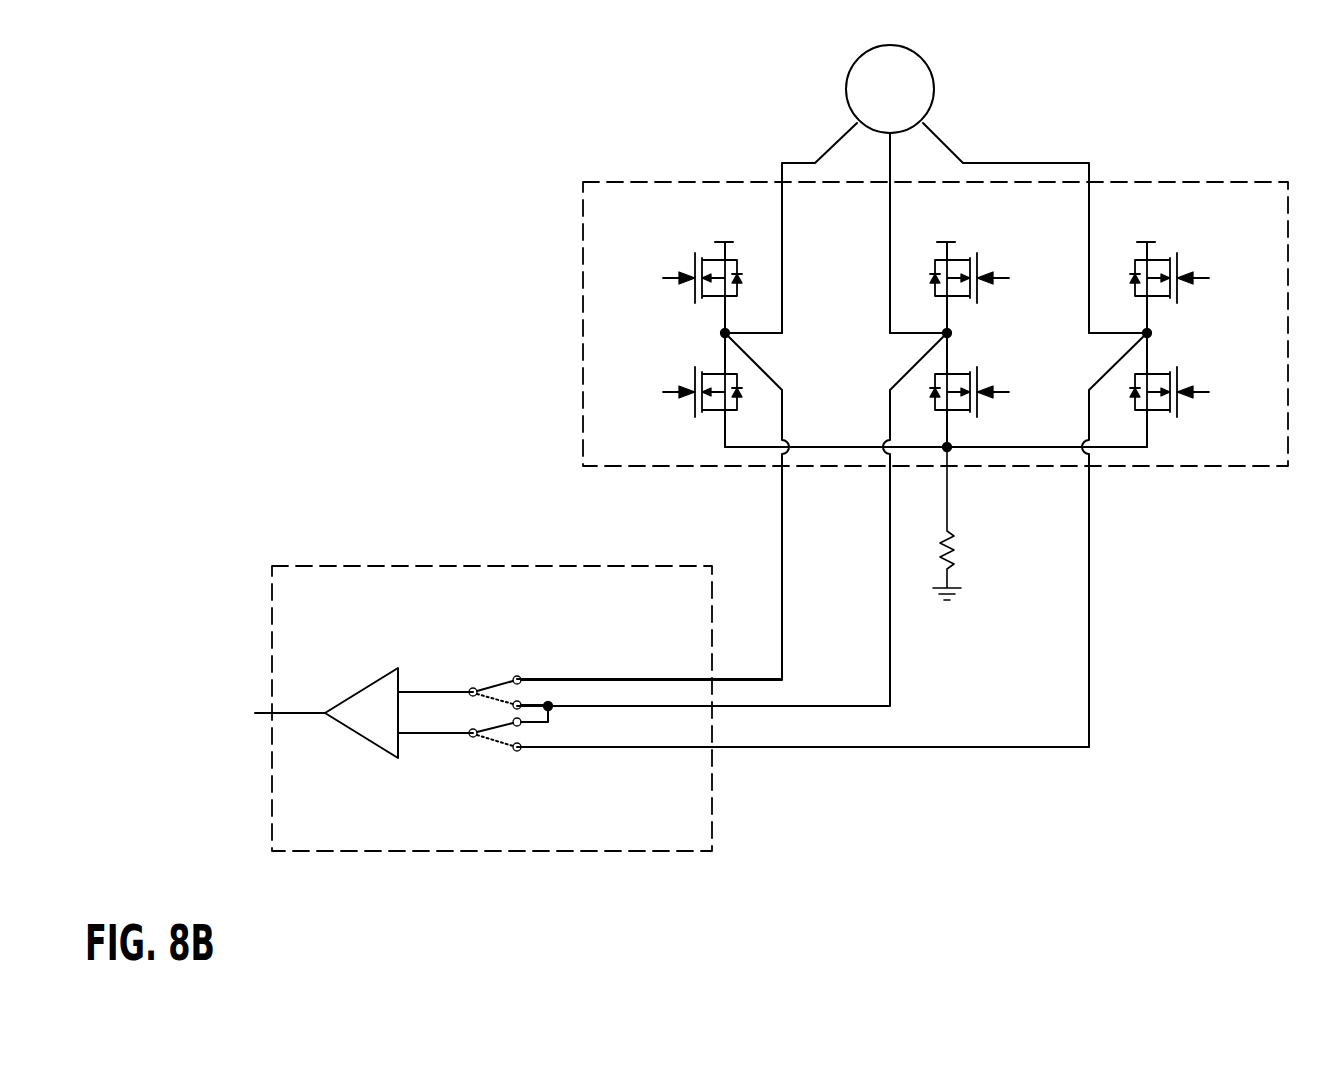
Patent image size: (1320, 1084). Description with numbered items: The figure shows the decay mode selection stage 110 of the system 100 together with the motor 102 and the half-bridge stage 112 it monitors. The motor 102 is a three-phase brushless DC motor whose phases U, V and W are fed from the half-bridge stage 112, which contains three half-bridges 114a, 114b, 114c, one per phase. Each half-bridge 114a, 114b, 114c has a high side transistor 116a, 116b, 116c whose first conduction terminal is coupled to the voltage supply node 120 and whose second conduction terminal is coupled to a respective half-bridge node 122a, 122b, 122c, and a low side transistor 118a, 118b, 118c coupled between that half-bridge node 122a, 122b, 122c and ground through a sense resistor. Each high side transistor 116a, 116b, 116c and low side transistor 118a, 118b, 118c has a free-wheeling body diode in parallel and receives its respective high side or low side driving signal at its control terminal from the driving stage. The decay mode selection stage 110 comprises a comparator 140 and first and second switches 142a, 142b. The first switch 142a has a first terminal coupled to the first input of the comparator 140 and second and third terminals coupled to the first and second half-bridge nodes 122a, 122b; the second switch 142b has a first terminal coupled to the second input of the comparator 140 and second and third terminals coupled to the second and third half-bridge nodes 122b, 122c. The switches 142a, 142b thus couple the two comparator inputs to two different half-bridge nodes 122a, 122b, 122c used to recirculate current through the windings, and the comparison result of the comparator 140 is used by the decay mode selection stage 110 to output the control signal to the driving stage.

The system 100 is at (1192, 106).
The motor 102 is at (935, 82).
The decay mode selection stage 110 is at (420, 565).
The half-bridge stage 112 is at (1178, 467).
The half-bridge 114a is at (650, 235).
The half-bridge 114b is at (1015, 236).
The half-bridge 114c is at (1147, 196).
The high side transistor 116a is at (710, 300).
The high side transistor 116b is at (960, 300).
The high side transistor 116c is at (1160, 300).
The low side transistor 118a is at (710, 414).
The low side transistor 118b is at (960, 414).
The low side transistor 118c is at (1160, 414).
The voltage supply node 120 is at (722, 240).
The half-bridge node 122a is at (729, 336).
The half-bridge node 122b is at (944, 336).
The half-bridge node 122c is at (1144, 336).
The comparator 140 is at (358, 690).
The first switch 142a is at (486, 677).
The second switch 142b is at (487, 752).